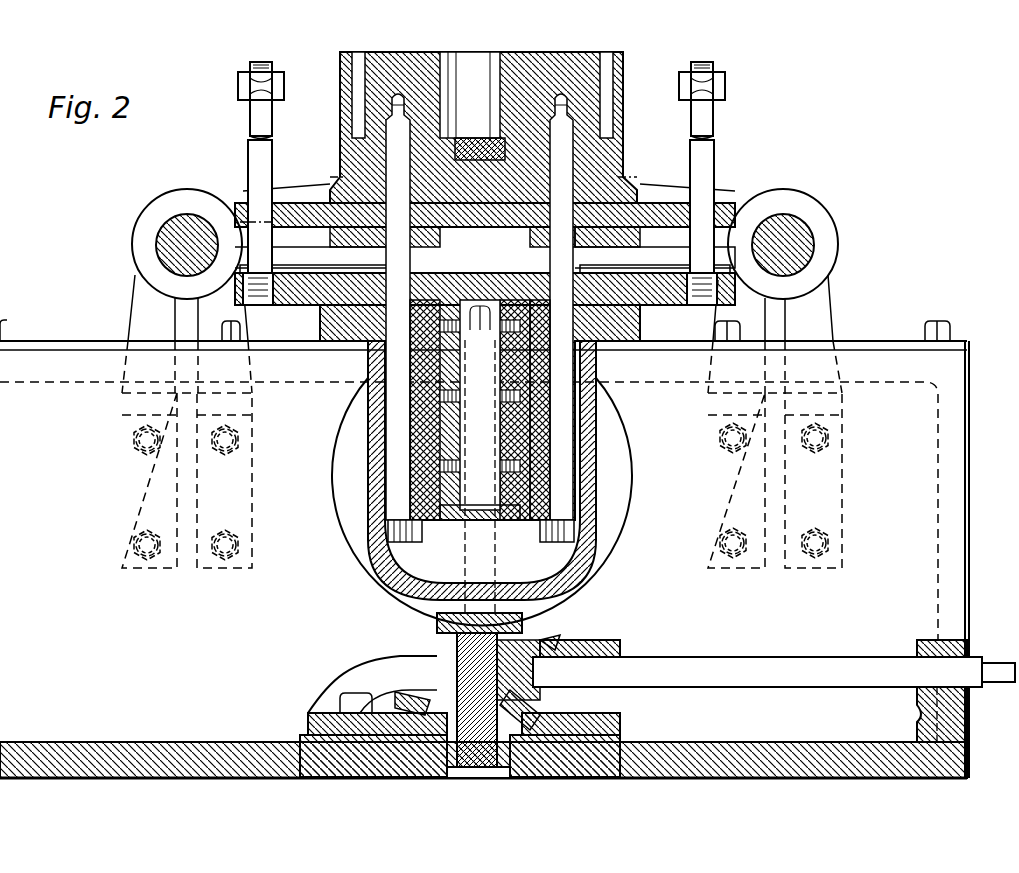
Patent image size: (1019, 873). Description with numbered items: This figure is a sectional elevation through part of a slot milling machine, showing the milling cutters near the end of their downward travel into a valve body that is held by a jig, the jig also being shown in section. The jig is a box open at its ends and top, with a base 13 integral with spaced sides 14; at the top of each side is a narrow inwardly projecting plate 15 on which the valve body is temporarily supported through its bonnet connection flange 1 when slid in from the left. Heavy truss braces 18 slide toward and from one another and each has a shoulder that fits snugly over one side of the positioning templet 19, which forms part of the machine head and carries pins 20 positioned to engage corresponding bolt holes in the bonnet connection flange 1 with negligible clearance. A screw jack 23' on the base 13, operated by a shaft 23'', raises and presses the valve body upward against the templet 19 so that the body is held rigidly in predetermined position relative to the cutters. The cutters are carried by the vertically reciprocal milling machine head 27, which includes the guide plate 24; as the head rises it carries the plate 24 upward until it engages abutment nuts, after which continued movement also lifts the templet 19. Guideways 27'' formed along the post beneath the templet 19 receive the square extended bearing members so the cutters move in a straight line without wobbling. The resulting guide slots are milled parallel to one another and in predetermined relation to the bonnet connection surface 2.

The bonnet connection flange 1 is at (640, 325).
The bonnet connection surface 2 is at (352, 320).
The base 13 is at (192, 750).
The sides 14 is at (484, 549).
The inwardly projecting plate 15 is at (70, 346).
The truss braces 18 is at (300, 190).
The positioning templet 19 is at (270, 368).
The pins 20 is at (620, 341).
The screw jack 23' is at (460, 707).
The shaft 23'' is at (774, 682).
The plate 24 is at (495, 285).
The milling machine head 27 is at (497, 127).
The guideways 27'' is at (543, 548).